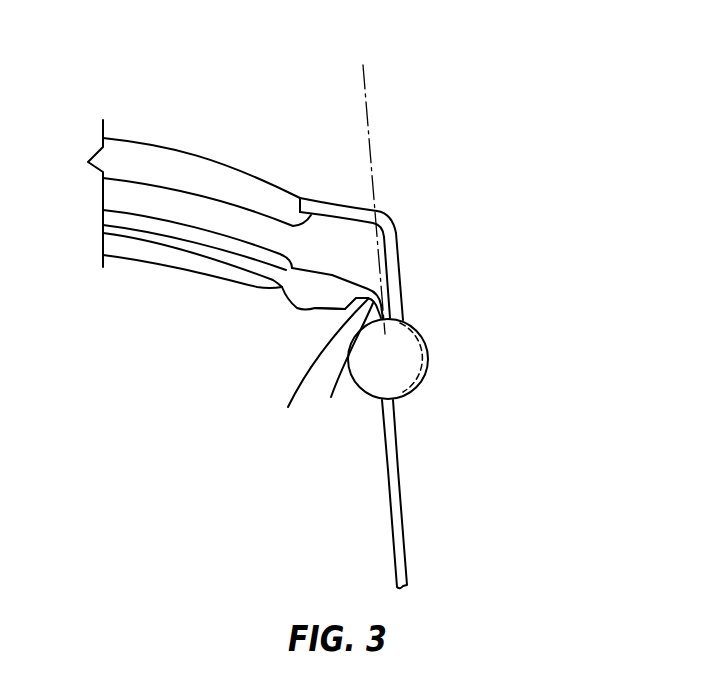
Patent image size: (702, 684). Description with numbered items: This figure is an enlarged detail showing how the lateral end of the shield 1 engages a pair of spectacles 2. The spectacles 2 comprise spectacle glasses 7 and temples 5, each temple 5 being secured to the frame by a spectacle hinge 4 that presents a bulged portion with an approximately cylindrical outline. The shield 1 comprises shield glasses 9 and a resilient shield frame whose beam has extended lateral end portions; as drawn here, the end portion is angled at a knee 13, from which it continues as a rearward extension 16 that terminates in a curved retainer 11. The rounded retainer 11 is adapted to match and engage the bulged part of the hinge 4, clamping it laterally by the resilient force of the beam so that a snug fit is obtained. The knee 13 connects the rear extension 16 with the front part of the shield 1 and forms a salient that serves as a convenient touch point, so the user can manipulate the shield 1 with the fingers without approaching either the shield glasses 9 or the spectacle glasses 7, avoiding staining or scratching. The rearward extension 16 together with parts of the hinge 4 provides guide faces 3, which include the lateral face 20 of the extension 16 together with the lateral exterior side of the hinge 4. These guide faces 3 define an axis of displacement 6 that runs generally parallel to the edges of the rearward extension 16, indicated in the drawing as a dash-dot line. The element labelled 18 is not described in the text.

The shield 1 is at (126, 102).
The spectacles 2 is at (193, 420).
The guide faces 3 is at (324, 368).
The spectacle hinge 4 is at (368, 398).
The temple 5 is at (403, 507).
The axis of displacement 6 is at (365, 82).
The spectacle glasses 7 is at (165, 270).
The shield glasses 9 is at (195, 157).
The retainer 11 is at (427, 370).
The knee 13 is at (392, 222).
The extension 16 is at (402, 277).
The flange edge 18 is at (327, 317).
The lateral face 20 is at (346, 364).